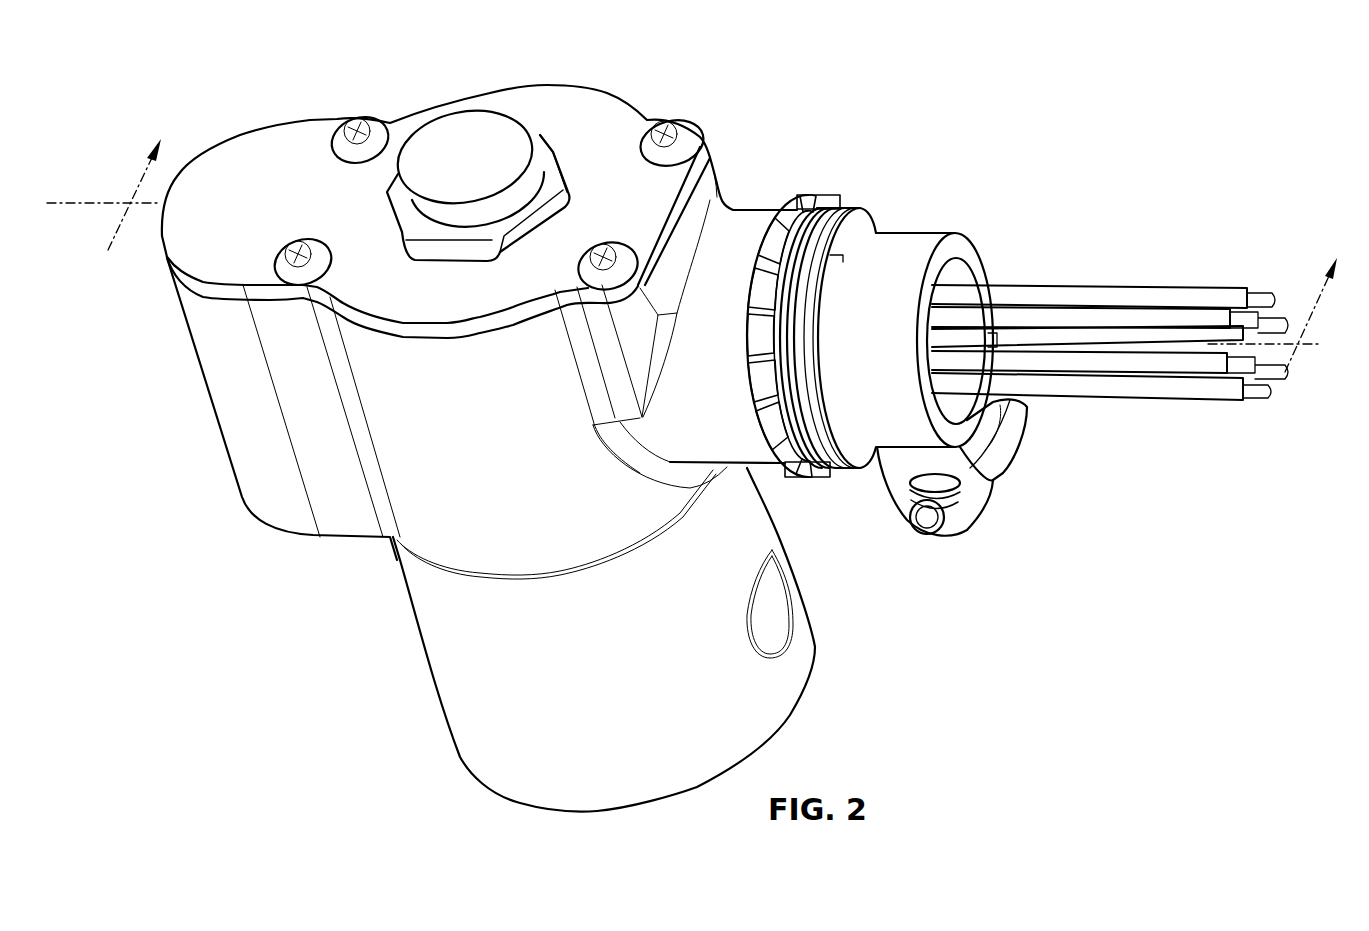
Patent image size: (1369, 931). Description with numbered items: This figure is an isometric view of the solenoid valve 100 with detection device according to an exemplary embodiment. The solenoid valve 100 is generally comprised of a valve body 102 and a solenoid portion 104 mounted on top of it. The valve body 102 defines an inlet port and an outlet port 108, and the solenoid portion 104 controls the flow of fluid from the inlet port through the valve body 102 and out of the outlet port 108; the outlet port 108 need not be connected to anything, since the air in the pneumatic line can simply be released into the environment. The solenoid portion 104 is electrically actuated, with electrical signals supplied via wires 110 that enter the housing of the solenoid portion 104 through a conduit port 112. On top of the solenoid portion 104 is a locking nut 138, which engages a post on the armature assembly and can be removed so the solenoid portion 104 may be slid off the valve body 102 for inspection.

The solenoid valve 100 is at (170, 91).
The valve body 102 is at (438, 704).
The solenoid portion 104 is at (713, 107).
The outlet port 108 is at (774, 590).
The wires 110 is at (1112, 292).
The conduit port 112 is at (908, 240).
The locking nut 138 is at (556, 192).